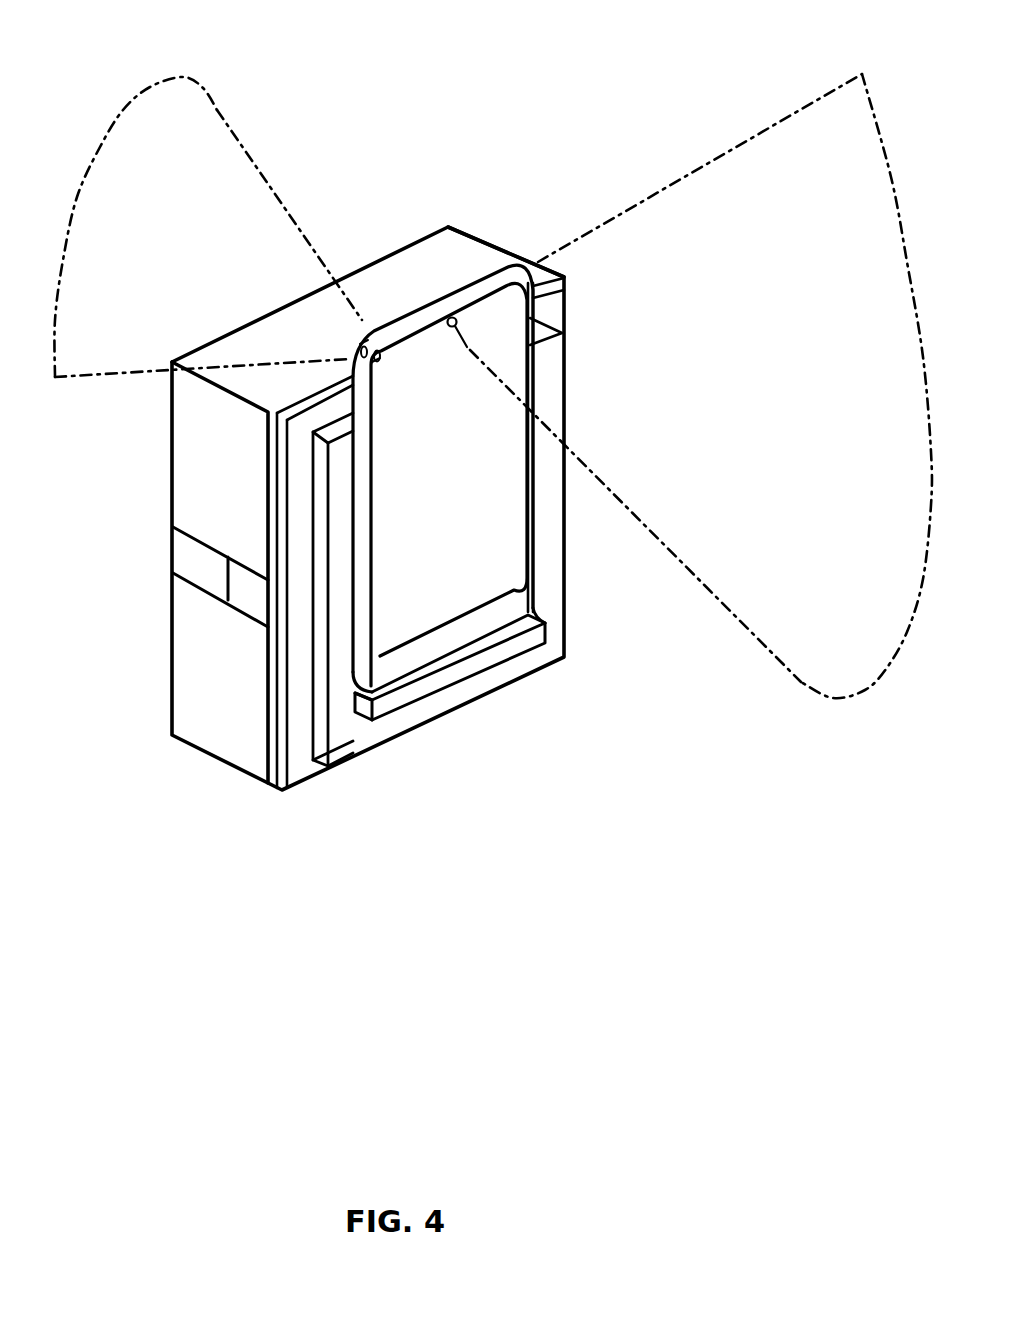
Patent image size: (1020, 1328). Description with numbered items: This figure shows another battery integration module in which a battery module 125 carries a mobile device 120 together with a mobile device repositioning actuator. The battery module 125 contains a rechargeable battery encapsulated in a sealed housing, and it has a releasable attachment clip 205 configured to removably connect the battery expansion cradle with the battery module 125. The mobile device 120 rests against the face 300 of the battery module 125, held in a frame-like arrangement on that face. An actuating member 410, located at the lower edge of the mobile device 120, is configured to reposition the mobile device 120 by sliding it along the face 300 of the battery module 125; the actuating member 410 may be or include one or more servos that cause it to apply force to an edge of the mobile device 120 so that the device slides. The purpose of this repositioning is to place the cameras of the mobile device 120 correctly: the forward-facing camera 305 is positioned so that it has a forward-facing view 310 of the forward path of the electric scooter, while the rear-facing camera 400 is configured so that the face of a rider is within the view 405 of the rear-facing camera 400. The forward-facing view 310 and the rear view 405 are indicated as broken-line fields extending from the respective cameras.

The mobile device 120 is at (365, 520).
The battery module 125 is at (448, 227).
The releasable attachment clip 205 is at (180, 553).
The face of the battery module 300 is at (340, 597).
The forward-facing camera 305 is at (355, 345).
The forward-facing view 310 is at (212, 100).
The rear-facing camera 400 is at (458, 310).
The view of the rear-facing camera 405 is at (806, 691).
The actuating member 410 is at (360, 716).